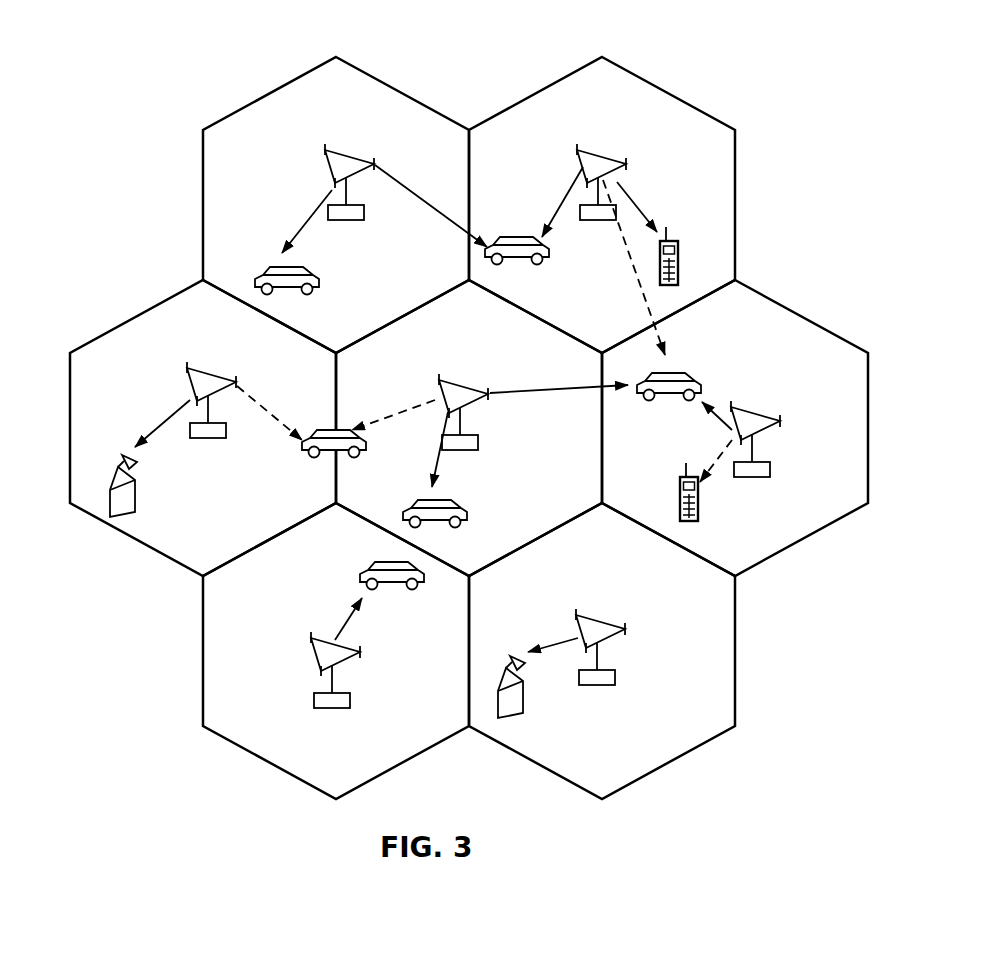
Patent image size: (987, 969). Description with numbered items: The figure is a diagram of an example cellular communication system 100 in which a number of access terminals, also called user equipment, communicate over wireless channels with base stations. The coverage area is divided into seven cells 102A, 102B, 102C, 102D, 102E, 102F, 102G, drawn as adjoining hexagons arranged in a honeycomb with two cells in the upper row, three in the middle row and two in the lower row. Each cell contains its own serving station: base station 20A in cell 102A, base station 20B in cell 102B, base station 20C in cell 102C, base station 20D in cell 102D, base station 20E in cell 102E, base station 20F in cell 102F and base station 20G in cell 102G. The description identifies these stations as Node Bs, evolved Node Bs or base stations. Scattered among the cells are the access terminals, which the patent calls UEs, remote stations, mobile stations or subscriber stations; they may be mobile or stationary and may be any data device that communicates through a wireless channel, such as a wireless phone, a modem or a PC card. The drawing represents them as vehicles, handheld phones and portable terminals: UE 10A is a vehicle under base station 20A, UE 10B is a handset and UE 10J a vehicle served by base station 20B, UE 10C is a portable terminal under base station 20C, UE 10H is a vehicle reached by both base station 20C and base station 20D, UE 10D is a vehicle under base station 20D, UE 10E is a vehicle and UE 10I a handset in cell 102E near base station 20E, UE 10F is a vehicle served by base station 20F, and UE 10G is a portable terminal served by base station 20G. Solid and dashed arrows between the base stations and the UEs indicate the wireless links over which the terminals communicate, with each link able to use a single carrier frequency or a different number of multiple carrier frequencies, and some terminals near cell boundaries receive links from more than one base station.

The cellular communication system 100 is at (795, 42).
The cell 102A is at (278, 88).
The cell 102B is at (664, 91).
The cell 102C is at (129, 320).
The cell 102D is at (506, 326).
The cell 102E is at (870, 430).
The cell 102F is at (204, 657).
The cell 102G is at (737, 627).
The base station 20A is at (335, 152).
The base station 20B is at (587, 153).
The base station 20C is at (197, 373).
The base station 20D is at (452, 384).
The base station 20E is at (742, 409).
The base station 20F is at (312, 642).
The base station 20G is at (588, 620).
The user equipment 10A is at (280, 270).
The user equipment 10B is at (668, 241).
The user equipment 10C is at (125, 449).
The user equipment 10D is at (435, 501).
The user equipment 10E is at (672, 374).
The user equipment 10F is at (383, 563).
The user equipment 10G is at (513, 653).
The user equipment 10H is at (323, 431).
The user equipment 10I is at (682, 474).
The user equipment 10J is at (520, 239).